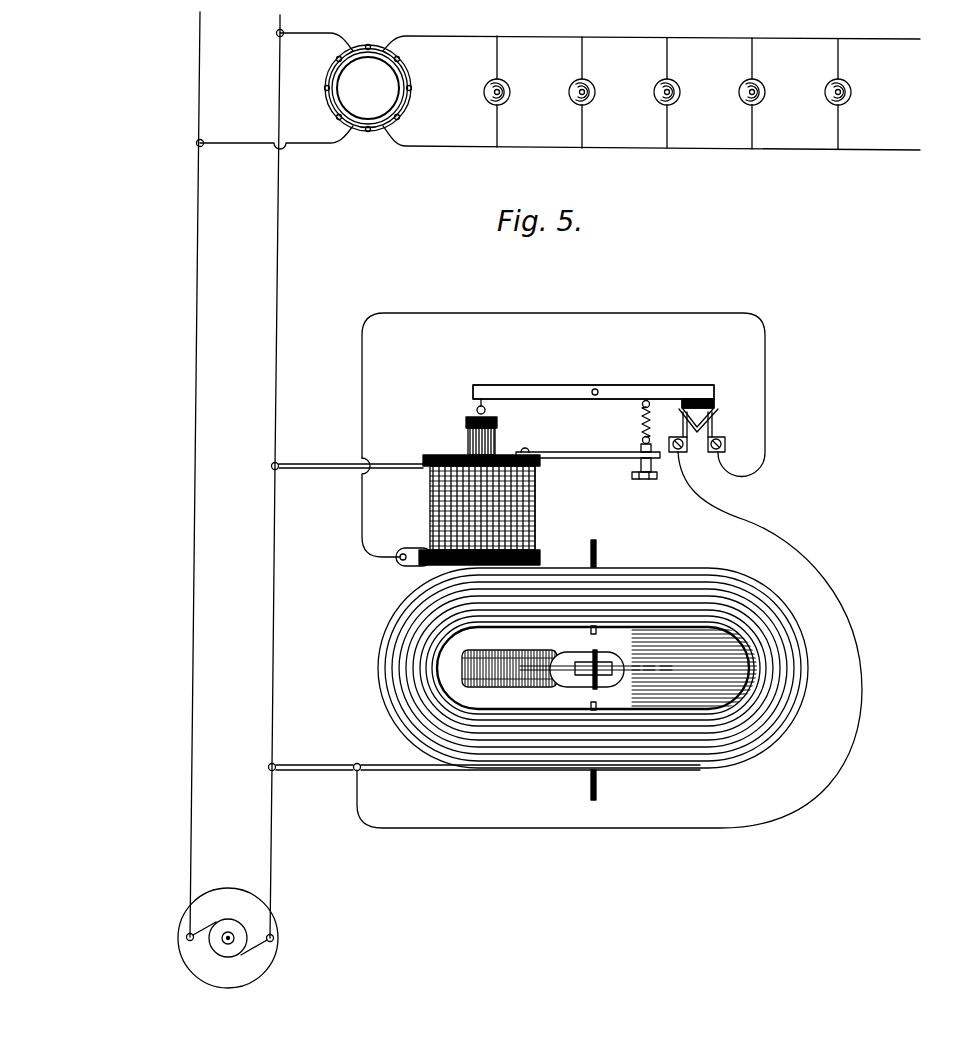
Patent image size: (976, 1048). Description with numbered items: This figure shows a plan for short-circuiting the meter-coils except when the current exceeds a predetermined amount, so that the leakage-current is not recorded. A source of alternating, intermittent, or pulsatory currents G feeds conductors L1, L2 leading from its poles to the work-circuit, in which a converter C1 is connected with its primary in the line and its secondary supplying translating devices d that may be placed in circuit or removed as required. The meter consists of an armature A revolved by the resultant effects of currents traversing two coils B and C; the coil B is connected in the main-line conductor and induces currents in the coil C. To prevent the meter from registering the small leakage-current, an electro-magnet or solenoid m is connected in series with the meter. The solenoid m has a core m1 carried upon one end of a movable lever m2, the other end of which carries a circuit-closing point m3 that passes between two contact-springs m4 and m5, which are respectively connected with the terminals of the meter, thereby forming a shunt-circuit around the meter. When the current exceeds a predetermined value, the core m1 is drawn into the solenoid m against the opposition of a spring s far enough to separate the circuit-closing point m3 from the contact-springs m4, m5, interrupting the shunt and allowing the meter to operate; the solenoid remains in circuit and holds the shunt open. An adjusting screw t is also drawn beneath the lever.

The converter C1 is at (368, 88).
The translating devices d is at (677, 92).
The conductor L1 is at (282, 476).
The conductor L2 is at (203, 474).
The source of electric currents G is at (234, 940).
The coil B is at (808, 655).
The coil C is at (509, 678).
The armature A is at (590, 683).
The solenoid m is at (422, 504).
The core m1 is at (497, 438).
The movable lever m2 is at (555, 400).
The circuit-closing point m3 is at (716, 404).
The contact-spring m4 is at (683, 430).
The contact-spring m5 is at (720, 430).
The spring s is at (638, 427).
The adjusting screw t is at (644, 482).